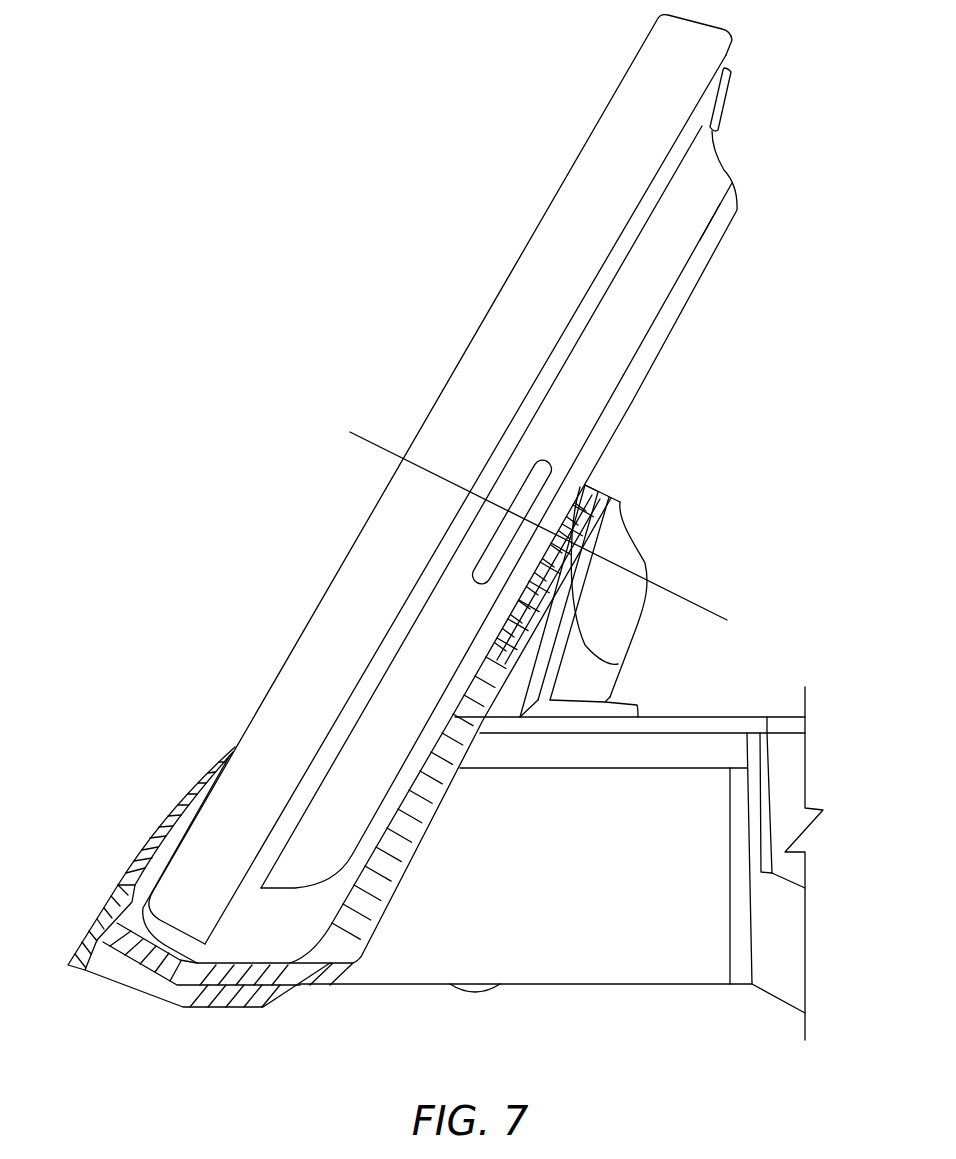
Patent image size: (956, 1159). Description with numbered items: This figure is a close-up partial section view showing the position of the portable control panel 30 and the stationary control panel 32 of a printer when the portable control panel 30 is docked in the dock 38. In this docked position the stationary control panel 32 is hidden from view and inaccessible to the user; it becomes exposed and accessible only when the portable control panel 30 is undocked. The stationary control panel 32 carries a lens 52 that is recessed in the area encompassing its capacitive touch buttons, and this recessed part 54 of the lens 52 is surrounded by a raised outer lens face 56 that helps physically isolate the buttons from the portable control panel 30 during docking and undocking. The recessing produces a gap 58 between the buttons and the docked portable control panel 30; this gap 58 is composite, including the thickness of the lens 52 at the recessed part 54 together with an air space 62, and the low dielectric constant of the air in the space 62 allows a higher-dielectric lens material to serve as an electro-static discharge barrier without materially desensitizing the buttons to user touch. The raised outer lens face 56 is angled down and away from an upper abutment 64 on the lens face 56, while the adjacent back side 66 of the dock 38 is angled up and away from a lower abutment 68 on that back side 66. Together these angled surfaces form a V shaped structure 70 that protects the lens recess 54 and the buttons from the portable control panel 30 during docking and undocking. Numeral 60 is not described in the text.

The portable control panel 30 is at (705, 172).
The stationary control panel 32 is at (607, 508).
The dock 38 is at (218, 978).
The lens 52 is at (530, 697).
The recessed part 54 is at (583, 547).
The raised outer lens face 56 is at (578, 488).
The gap 58 is at (392, 458).
The case 60 is at (683, 330).
The air space 62 is at (553, 532).
The upper abutment 64 is at (587, 484).
The back side 66 is at (413, 817).
The lower abutment 68 is at (407, 887).
The V shaped structure 70 is at (443, 768).